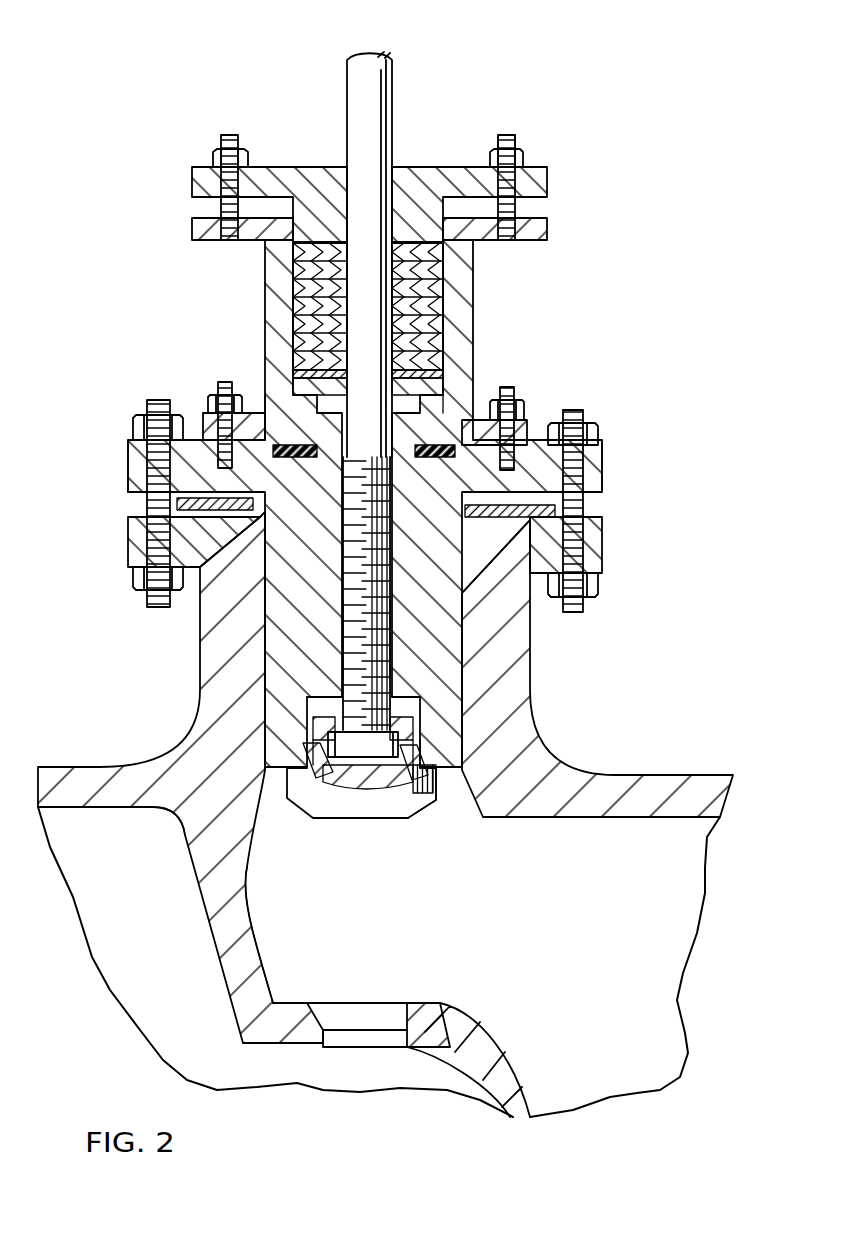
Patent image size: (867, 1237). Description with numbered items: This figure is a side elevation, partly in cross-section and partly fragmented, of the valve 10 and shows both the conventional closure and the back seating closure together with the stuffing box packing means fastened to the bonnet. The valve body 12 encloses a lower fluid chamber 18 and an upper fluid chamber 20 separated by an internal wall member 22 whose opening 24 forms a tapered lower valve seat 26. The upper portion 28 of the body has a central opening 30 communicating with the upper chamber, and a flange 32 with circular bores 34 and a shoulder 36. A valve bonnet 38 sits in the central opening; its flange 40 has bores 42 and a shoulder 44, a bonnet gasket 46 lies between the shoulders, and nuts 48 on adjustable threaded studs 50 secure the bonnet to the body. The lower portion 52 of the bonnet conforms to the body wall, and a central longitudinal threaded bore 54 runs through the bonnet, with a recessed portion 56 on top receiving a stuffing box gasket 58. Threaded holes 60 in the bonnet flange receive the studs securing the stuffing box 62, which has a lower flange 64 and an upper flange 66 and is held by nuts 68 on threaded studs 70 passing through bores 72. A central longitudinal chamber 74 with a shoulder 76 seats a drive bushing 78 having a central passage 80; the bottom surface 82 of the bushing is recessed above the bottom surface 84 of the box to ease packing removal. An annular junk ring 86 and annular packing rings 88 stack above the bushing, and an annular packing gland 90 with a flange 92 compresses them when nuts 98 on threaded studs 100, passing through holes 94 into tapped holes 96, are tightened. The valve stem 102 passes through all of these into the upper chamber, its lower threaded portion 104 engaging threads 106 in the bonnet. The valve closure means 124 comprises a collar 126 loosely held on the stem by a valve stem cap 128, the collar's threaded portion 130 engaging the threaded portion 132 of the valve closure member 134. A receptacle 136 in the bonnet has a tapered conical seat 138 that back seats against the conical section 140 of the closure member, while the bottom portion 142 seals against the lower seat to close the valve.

The valve 10 is at (108, 420).
The valve body 12 is at (670, 775).
The lower fluid chamber 18 is at (174, 991).
The upper fluid chamber 20 is at (403, 926).
The internal wall member 22 is at (252, 922).
The opening 24 is at (323, 1047).
The tapered lower valve seat 26 is at (418, 1015).
The upper portion 28 is at (265, 623).
The central opening 30 is at (462, 660).
The flange 32 is at (602, 562).
The circular bores 34 is at (602, 532).
The shoulder 36 is at (128, 536).
The valve bonnet 38 is at (425, 700).
The flange 40 is at (128, 460).
The circular bores 42 is at (602, 458).
The shoulder 44 is at (556, 511).
The bonnet gasket 46 is at (177, 504).
The nuts 48 is at (598, 432).
The adjustable threaded studs 50 is at (583, 412).
The lower portion 52 is at (342, 646).
The central longitudinal threaded bore 54 is at (300, 690).
The recessed portion 56 is at (460, 432).
The stuffing box gasket 58 is at (285, 445).
The threaded holes 60 is at (208, 405).
The stuffing box 62 is at (473, 300).
The lower flange 64 is at (524, 408).
The upper flange 66 is at (547, 240).
The nuts 68 is at (527, 428).
The threaded studs 70 is at (515, 398).
The bores 72 is at (213, 428).
The central longitudinal chamber 74 is at (297, 265).
The shoulder 76 is at (470, 398).
The drive bushing 78 is at (265, 410).
The central passage 80 is at (335, 368).
The bottom surface 82 is at (380, 462).
The bottom surface 84 is at (436, 458).
The annular junk ring 86 is at (445, 372).
The annular packing rings 88 is at (445, 272).
The annular packing gland 90 is at (405, 167).
The flange 92 is at (547, 183).
The holes 94 is at (527, 168).
The tapped holes 96 is at (547, 226).
The nuts 98 is at (524, 156).
The threaded studs 100 is at (511, 134).
The valve stem 102 is at (385, 100).
The lower threaded portion 104 is at (395, 645).
The threads 106 is at (462, 708).
The valve closure means 124 is at (306, 748).
The collar 126 is at (445, 770).
The valve stem cap 128 is at (352, 745).
The threaded portion 130 is at (400, 760).
The threaded portion 132 is at (328, 786).
The valve closure member 134 is at (420, 818).
The receptacle 136 is at (315, 725).
The tapered conical seat 138 is at (312, 772).
The conical section 140 is at (432, 790).
The bottom portion 142 is at (437, 805).